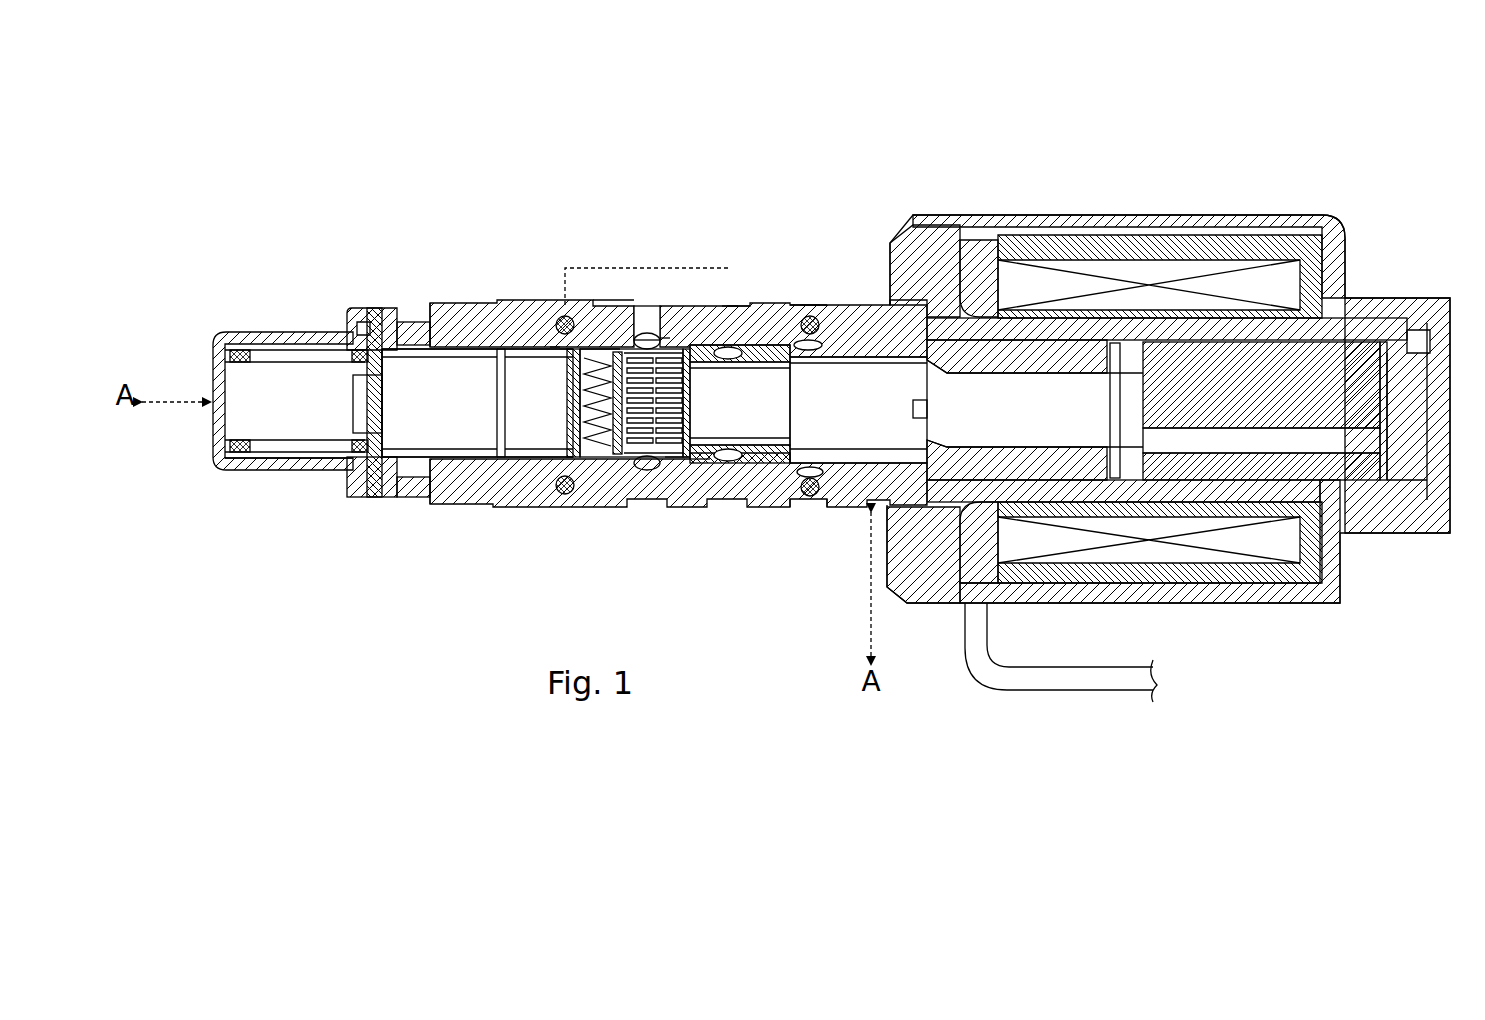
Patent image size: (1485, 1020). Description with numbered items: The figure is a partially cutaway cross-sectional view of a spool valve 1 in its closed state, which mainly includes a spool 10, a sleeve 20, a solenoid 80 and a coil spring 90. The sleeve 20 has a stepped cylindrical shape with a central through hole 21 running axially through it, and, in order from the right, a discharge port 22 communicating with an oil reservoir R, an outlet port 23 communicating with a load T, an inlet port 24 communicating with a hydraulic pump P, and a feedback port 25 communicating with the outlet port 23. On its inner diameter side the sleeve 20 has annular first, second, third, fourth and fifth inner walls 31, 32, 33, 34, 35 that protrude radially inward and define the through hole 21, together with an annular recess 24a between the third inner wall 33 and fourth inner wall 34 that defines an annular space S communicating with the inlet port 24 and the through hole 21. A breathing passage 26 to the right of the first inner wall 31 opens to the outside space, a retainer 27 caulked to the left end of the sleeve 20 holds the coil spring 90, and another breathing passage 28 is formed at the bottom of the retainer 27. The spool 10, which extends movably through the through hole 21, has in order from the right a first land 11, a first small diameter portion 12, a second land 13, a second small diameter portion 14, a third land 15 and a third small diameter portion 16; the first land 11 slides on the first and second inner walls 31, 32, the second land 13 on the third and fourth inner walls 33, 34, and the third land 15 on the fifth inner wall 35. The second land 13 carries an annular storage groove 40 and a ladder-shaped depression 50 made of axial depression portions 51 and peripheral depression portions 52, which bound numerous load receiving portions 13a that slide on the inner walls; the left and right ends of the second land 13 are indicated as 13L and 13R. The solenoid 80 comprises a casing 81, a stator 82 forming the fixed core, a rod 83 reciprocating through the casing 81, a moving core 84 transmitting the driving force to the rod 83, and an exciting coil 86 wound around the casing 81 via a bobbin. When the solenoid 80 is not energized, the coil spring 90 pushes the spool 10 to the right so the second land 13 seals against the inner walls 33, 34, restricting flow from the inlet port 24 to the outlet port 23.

The spool valve 1 is at (1390, 106).
The spool 10 is at (838, 500).
The first land 11 is at (857, 390).
The first small diameter portion 12 is at (763, 385).
The second land 13 is at (717, 306).
The load receiving portions 13a is at (600, 346).
The left sleeve 13L is at (520, 495).
The right sleeve 13R is at (722, 492).
The second small diameter portion 14 is at (525, 340).
The third land 15 is at (415, 380).
The third small diameter portion 16 is at (350, 320).
The sleeve 20 is at (773, 522).
The through hole 21 is at (945, 468).
The discharge port 22 is at (800, 305).
The outlet port 23 is at (736, 306).
The inlet port 24 is at (645, 340).
The recess 24a is at (667, 305).
The feedback port 25 is at (555, 330).
The breathing passage 26 is at (898, 540).
The retainer 27 is at (283, 470).
The breathing passage 28 is at (213, 378).
The first inner wall 31 is at (815, 505).
The second inner wall 32 is at (783, 500).
The third inner wall 33 is at (700, 478).
The fourth inner wall 34 is at (620, 512).
The fifth inner wall 35 is at (448, 495).
The storage groove 40 is at (590, 492).
The depression 50 is at (557, 492).
The axial depression portions 51 is at (690, 505).
The peripheral depression portions 52 is at (648, 497).
The solenoid 80 is at (1282, 186).
The casing 81 is at (1393, 308).
The stator 82 is at (945, 225).
The rod 83 is at (1055, 400).
The moving core 84 is at (1350, 475).
The exciting coil 86 is at (1233, 545).
The coil spring 90 is at (265, 333).
The hydraulic pump P is at (648, 305).
The load T is at (730, 306).
The oil reservoir R is at (810, 305).
The annular space S is at (678, 505).